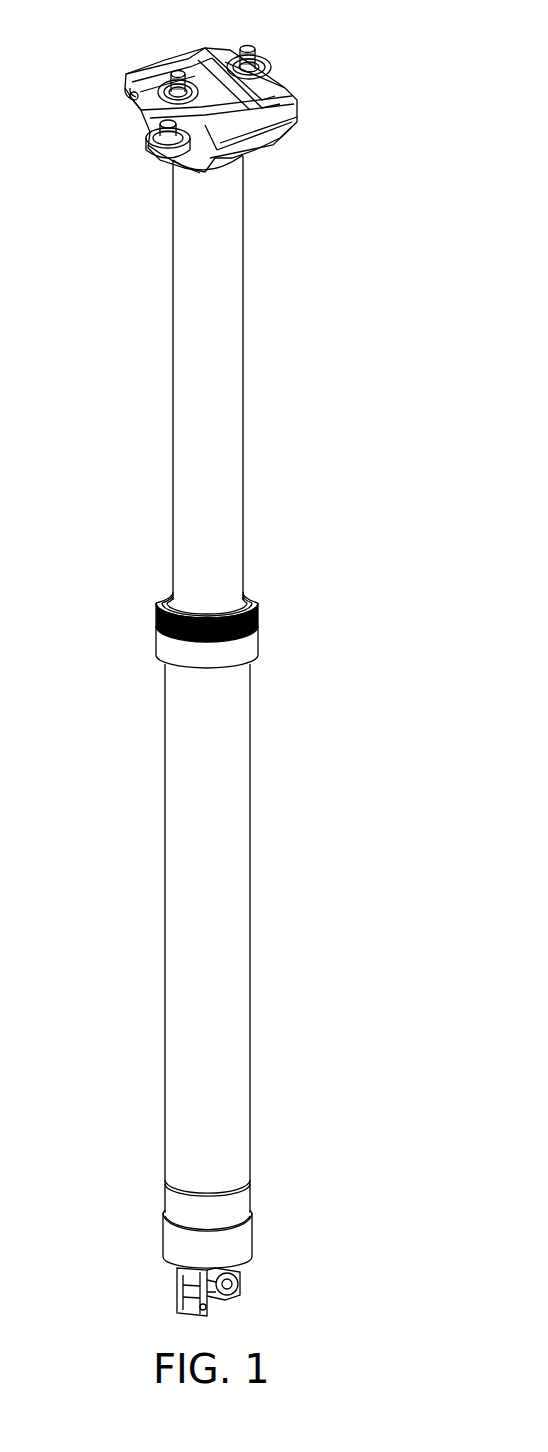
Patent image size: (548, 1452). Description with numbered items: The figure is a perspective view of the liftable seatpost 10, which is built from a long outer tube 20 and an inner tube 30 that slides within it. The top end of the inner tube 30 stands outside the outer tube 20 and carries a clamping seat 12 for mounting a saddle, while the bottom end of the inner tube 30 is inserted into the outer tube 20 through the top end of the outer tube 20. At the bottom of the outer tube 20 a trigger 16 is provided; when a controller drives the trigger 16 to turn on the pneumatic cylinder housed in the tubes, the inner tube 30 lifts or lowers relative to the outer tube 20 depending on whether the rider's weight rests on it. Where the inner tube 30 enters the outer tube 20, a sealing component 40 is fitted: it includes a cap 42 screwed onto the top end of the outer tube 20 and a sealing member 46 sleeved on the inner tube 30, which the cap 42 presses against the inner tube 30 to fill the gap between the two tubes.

The liftable seatpost 10 is at (246, 662).
The clamping seat 12 is at (113, 140).
The trigger 16 is at (162, 1286).
The outer tube 20 is at (215, 953).
The inner tube 30 is at (215, 382).
The sealing component 40 is at (297, 652).
The cap 42 is at (212, 660).
The sealing member 46 is at (250, 604).